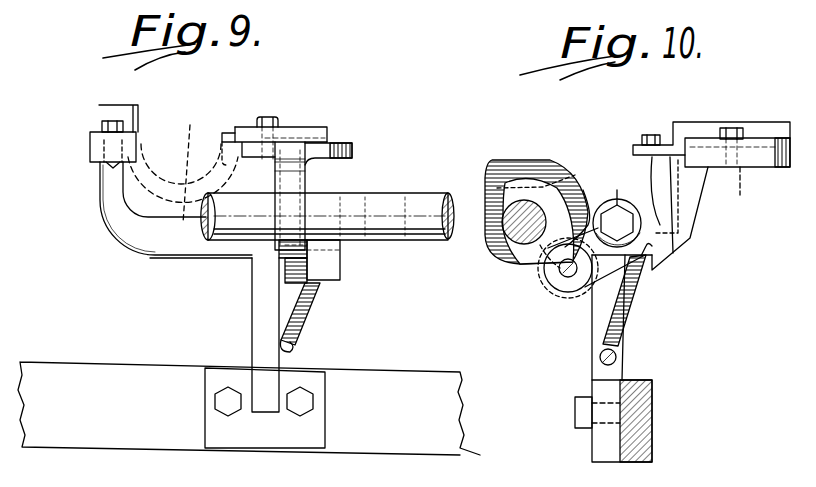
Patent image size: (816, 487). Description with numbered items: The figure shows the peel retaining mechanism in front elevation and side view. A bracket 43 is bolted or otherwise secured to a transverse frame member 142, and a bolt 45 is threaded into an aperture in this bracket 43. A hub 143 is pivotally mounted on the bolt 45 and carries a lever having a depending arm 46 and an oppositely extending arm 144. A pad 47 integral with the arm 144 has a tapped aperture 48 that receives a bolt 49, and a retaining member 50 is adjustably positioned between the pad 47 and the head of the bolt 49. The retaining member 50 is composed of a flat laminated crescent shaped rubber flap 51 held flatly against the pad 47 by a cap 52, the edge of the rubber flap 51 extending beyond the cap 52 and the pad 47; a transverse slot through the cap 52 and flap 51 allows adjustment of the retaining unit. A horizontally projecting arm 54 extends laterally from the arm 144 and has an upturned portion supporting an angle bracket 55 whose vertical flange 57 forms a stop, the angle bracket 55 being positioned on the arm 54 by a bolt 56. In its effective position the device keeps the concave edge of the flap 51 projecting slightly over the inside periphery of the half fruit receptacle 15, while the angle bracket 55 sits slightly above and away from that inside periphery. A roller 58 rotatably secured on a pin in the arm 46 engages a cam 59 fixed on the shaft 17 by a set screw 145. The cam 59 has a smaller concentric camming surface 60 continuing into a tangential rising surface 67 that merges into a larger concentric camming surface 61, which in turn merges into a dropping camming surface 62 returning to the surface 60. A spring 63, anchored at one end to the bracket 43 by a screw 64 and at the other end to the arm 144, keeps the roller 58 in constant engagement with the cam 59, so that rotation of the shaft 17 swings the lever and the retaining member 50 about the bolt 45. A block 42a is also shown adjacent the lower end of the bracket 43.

In FIG. 9, the half fruit receptacle 15 is at (177, 162).
In FIG. 9, the shaft 17 is at (398, 194).
In FIG. 10, the shaft 17 is at (518, 238).
In FIG. 10, the block 42a is at (640, 440).
In FIG. 9, the bracket 43 is at (255, 333).
In FIG. 10, the bracket 43 is at (625, 363).
In FIG. 10, the bolt 45 is at (614, 204).
In FIG. 9, the depending arm 46 is at (338, 272).
In FIG. 10, the depending arm 46 is at (566, 278).
In FIG. 9, the pad 47 is at (352, 148).
In FIG. 10, the pad 47 is at (782, 168).
In FIG. 10, the tapped aperture 48 is at (751, 191).
In FIG. 9, the bolt 49 is at (268, 117).
In FIG. 10, the bolt 49 is at (736, 128).
In FIG. 9, the retaining member 50 is at (326, 115).
In FIG. 10, the retaining member 50 is at (776, 130).
In FIG. 9, the rubber flap 51 is at (224, 135).
In FIG. 9, the cap 52 is at (283, 130).
In FIG. 9, the horizontally projecting arm 54 is at (150, 248).
In FIG. 9, the angle bracket 55 is at (90, 135).
In FIG. 9, the bolt 56 is at (102, 118).
In FIG. 10, the bolt 56 is at (647, 134).
In FIG. 9, the vertical flange 57 is at (140, 108).
In FIG. 10, the vertical flange 57 is at (676, 122).
In FIG. 9, the roller 58 is at (312, 300).
In FIG. 10, the roller 58 is at (552, 284).
In FIG. 9, the cam 59 is at (292, 210).
In FIG. 10, the cam 59 is at (526, 160).
In FIG. 10, the concentric camming surface 60 is at (503, 238).
In FIG. 10, the concentric camming surface 61 is at (549, 162).
In FIG. 10, the dropping camming surface 62 is at (490, 181).
In FIG. 9, the spring 63 is at (313, 321).
In FIG. 10, the spring 63 is at (645, 296).
In FIG. 10, the screw 64 is at (600, 357).
In FIG. 10, the tangential rising surface 67 is at (583, 190).
In FIG. 9, the transverse frame member 142 is at (125, 378).
In FIG. 10, the hub 143 is at (676, 244).
In FIG. 10, the oppositely extending arm 144 is at (685, 208).
In FIG. 10, the set screw 145 is at (538, 248).